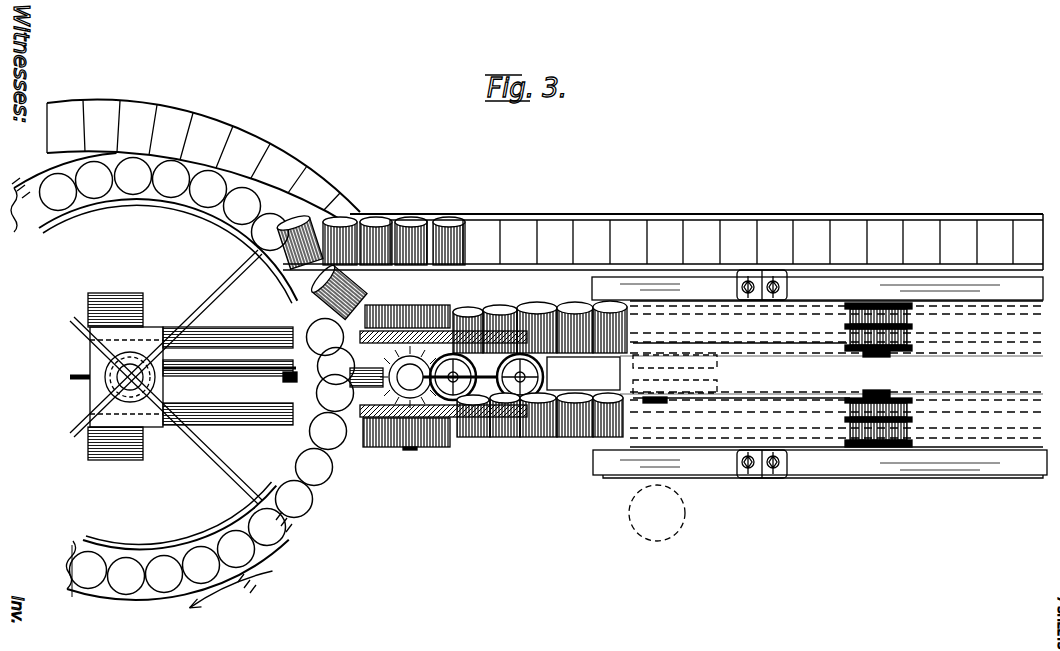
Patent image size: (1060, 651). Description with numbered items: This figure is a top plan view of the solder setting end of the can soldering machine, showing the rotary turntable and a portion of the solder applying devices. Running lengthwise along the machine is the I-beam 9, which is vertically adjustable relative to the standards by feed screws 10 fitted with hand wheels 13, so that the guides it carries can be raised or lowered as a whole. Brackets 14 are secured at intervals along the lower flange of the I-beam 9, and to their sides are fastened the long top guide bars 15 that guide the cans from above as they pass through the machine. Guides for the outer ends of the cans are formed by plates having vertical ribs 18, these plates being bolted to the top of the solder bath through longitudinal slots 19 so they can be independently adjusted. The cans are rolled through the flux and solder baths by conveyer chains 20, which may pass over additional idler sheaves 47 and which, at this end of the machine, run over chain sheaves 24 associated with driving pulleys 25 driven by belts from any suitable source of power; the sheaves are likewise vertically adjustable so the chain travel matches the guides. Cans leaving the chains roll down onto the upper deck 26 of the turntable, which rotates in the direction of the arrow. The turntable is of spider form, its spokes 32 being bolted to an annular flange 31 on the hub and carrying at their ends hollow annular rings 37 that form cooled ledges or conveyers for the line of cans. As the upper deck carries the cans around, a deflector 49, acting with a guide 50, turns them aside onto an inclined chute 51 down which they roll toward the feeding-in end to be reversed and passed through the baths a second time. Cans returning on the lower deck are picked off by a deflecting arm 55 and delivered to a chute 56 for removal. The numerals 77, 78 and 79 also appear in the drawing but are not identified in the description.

The I-beam 9 is at (831, 375).
The feed screw 10 is at (457, 425).
The hand wheel 13 is at (415, 425).
The bracket 14 is at (657, 412).
The top guide bar 15 is at (748, 340).
The vertical rib 18 is at (1033, 450).
The longitudinal slot 19 is at (777, 470).
The conveyer chain 20 is at (472, 353).
The chain sheave 24 is at (365, 335).
The driving pulley 25 is at (443, 312).
The upper deck 26 is at (308, 509).
The annular flange 31 is at (106, 585).
The spoke 32 is at (212, 458).
The hollow annular ring 37 is at (290, 520).
The idler sheave 47 is at (910, 330).
The deflector 49 is at (267, 267).
The guide 50 is at (357, 212).
The inclined chute 51 is at (643, 220).
The deflecting arm 55 is at (348, 308).
The chute 56 is at (250, 132).
The side rail 77 is at (713, 287).
The upper track guide 78 is at (813, 300).
The upper clamp 79 is at (782, 272).